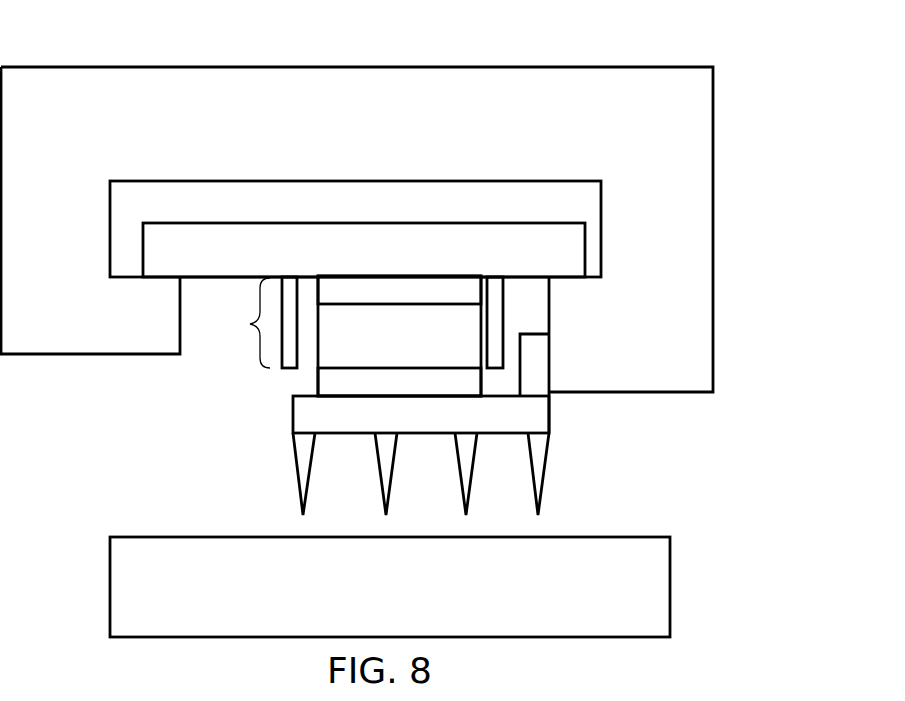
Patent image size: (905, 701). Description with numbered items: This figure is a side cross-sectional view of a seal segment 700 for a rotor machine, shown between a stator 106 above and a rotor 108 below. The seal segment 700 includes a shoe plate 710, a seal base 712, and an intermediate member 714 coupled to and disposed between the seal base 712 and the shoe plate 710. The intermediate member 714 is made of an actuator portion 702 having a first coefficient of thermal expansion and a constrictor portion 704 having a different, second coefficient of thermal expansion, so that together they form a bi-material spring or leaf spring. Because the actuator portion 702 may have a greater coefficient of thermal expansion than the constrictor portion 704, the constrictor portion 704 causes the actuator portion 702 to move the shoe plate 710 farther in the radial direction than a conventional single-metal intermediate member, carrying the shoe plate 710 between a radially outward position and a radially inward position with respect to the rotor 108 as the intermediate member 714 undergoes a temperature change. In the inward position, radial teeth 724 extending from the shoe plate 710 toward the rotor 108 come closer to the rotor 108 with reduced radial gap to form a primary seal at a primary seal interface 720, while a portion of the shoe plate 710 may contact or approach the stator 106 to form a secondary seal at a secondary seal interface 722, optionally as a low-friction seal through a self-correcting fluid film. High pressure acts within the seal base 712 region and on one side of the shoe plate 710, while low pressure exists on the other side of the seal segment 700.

The seal segment 700 is at (625, 42).
The stator 106 is at (713, 80).
The rotor 108 is at (110, 587).
The actuator portion 702 is at (352, 338).
The constrictor portion 704 is at (428, 378).
The shoe plate 710 is at (550, 411).
The seal base 712 is at (587, 243).
The intermediate member 714 is at (250, 324).
The primary seal interface 720 is at (505, 522).
The secondary seal interface 722 is at (552, 377).
The radial tooth 724 is at (551, 450).